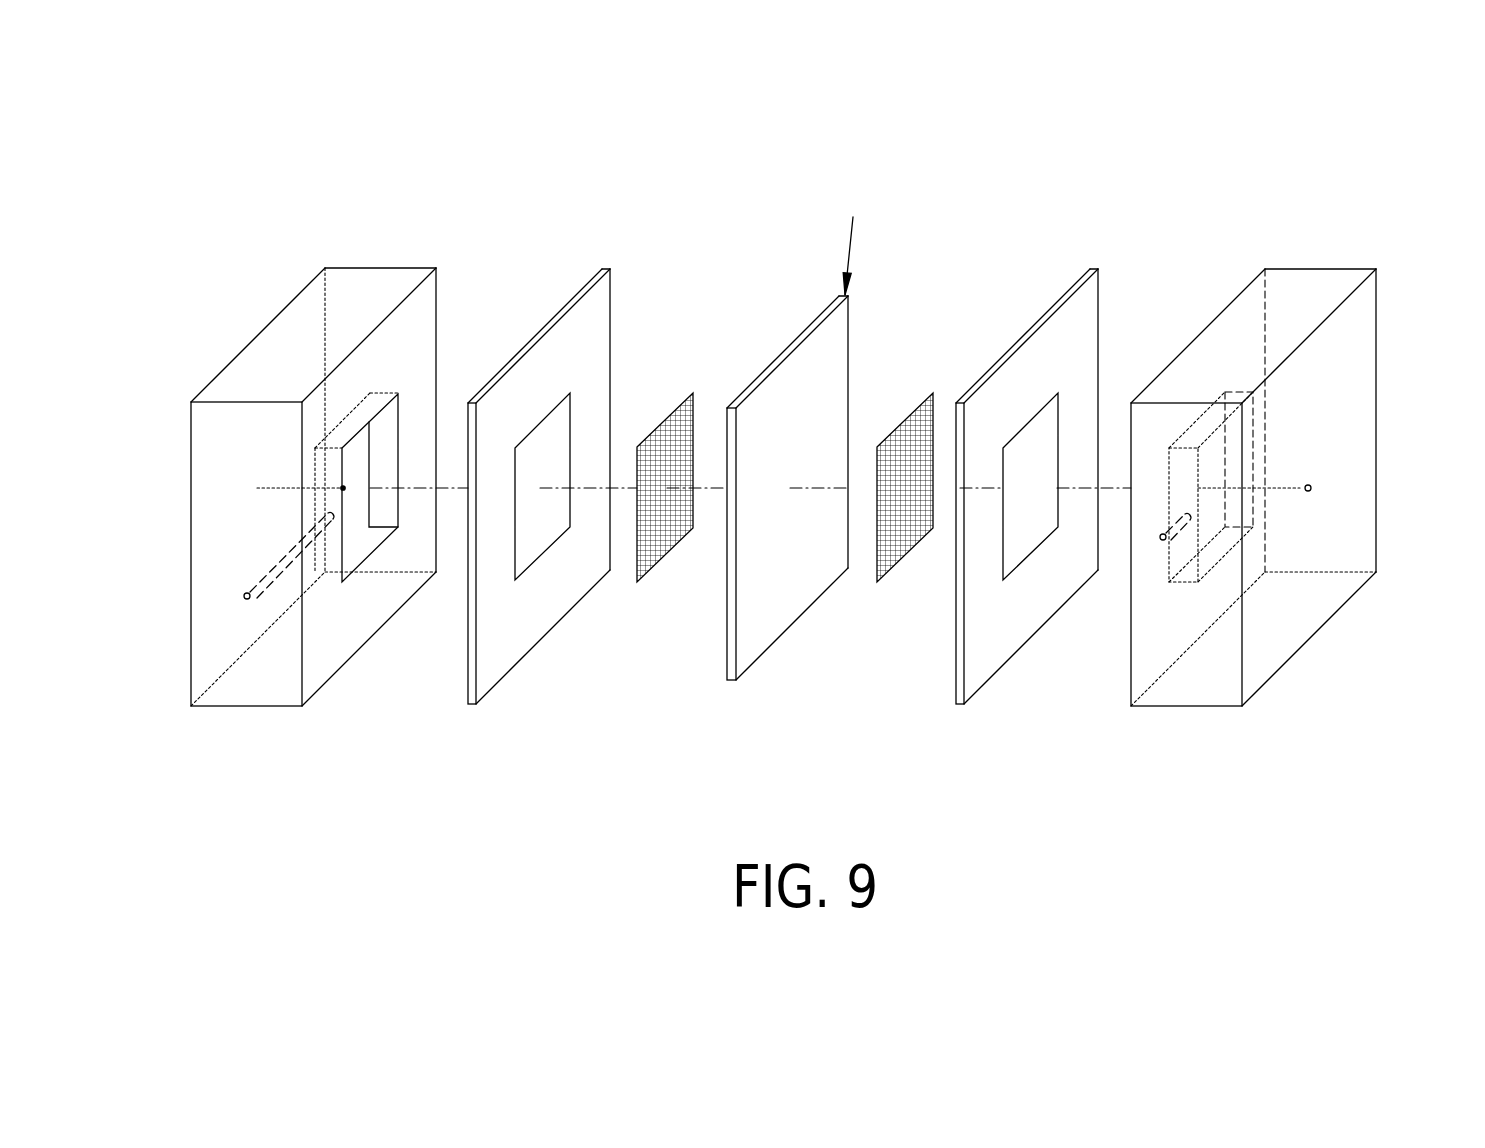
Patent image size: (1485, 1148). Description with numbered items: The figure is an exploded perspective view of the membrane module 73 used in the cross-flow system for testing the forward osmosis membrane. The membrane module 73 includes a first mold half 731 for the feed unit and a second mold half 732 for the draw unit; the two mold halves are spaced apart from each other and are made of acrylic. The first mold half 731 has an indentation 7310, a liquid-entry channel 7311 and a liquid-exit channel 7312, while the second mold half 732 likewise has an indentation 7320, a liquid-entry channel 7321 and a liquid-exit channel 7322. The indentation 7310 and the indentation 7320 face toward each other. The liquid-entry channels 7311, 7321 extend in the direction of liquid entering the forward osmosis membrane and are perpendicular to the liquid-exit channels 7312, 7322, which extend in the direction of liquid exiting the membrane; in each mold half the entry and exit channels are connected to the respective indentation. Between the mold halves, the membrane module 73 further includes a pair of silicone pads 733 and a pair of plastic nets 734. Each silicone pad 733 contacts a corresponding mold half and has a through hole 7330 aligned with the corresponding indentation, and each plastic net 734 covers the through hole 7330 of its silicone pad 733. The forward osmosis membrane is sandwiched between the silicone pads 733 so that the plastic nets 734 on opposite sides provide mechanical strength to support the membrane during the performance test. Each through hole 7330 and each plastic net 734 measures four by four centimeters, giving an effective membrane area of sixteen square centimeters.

The membrane module 73 is at (341, 203).
The first mold half 731 is at (273, 693).
The indentation 7310 is at (362, 556).
The liquid-entry channel 7311 is at (250, 577).
The liquid-exit channel 7312 is at (257, 488).
The second mold half 732 is at (1220, 693).
The indentation 7320 is at (1178, 582).
The liquid-entry channel 7321 is at (1163, 537).
The liquid-exit channel 7322 is at (1273, 485).
The silicone pad 733 is at (606, 267).
The through hole 7330 is at (555, 428).
The plastic net 734 is at (877, 582).